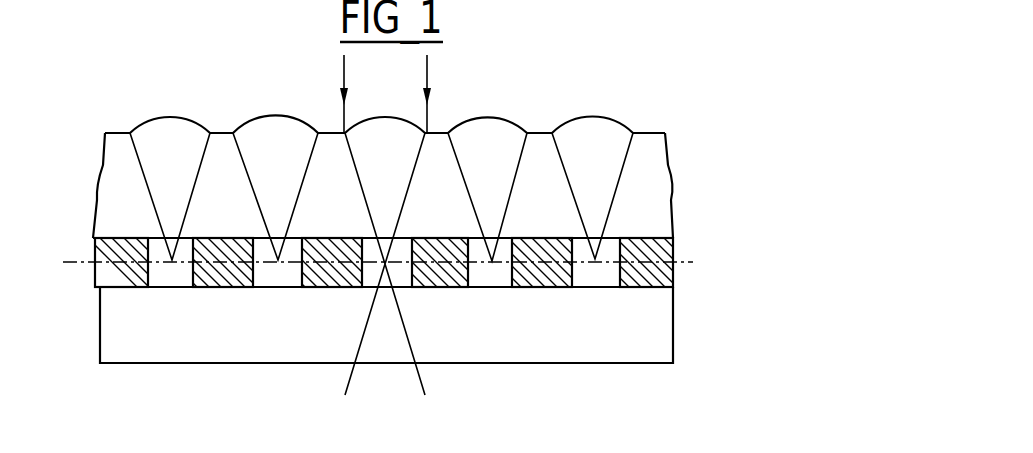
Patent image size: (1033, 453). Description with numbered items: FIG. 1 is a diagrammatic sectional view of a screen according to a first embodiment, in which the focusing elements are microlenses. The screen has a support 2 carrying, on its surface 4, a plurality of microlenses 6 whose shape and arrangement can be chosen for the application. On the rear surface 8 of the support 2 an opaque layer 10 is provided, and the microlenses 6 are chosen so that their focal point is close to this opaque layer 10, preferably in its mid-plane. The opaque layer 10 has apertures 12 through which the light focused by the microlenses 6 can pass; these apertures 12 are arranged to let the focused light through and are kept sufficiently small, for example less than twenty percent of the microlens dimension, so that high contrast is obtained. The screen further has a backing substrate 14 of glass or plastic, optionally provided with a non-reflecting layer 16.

The support 2 is at (650, 188).
The rear surface 4 is at (644, 129).
The microlenses 6 is at (497, 113).
The rear surface 8 is at (105, 237).
The opaque layer 10 is at (107, 277).
The apertures 12 is at (156, 277).
The backing substrate 14 is at (662, 338).
The non-reflecting layer 16 is at (641, 364).